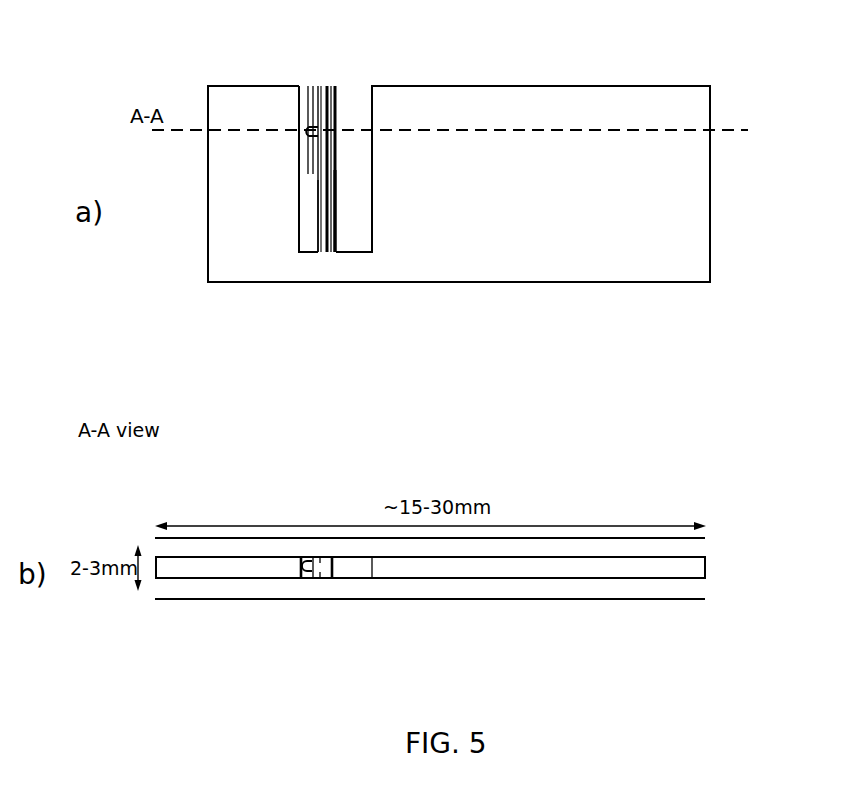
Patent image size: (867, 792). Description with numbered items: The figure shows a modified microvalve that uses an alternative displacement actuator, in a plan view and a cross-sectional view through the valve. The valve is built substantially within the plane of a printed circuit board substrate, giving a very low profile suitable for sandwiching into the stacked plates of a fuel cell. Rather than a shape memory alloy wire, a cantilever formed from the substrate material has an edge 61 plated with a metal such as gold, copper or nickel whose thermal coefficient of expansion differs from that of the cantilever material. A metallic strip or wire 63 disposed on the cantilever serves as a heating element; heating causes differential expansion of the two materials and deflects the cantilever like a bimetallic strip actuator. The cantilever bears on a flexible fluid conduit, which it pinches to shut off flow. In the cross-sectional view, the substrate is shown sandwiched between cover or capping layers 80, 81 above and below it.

The edge 61 is at (337, 155).
The metallic strip or wire 63 is at (320, 199).
The cover or capping layer 80 is at (698, 548).
The cover or capping layer 81 is at (702, 590).